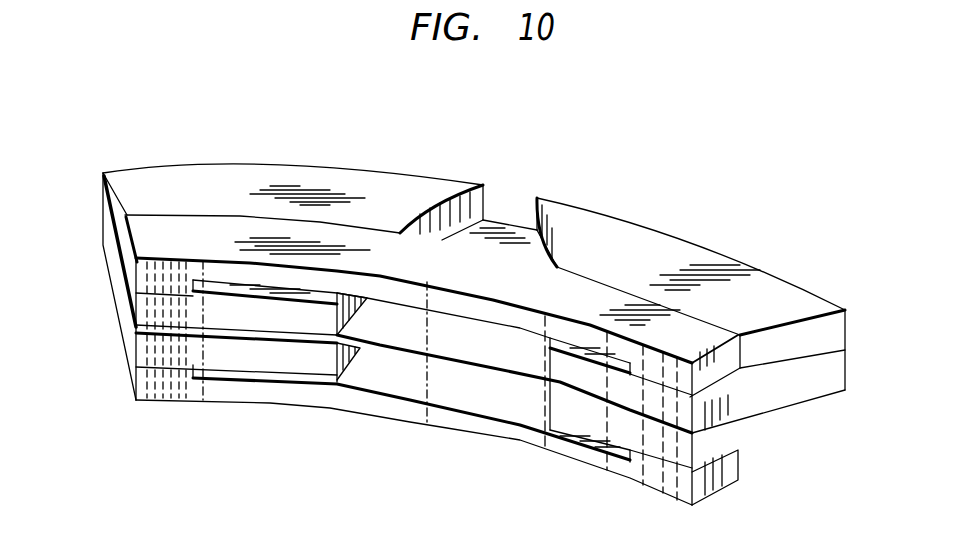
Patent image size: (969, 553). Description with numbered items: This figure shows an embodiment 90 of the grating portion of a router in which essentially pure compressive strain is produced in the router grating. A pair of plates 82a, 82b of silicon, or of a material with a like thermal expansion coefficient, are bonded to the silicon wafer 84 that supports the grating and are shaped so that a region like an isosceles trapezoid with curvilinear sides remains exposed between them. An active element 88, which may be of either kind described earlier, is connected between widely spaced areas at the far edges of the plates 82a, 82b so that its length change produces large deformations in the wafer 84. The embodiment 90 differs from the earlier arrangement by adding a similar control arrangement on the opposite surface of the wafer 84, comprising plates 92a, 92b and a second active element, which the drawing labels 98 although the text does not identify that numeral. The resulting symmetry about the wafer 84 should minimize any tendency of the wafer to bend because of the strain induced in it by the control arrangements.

The plate 82a is at (268, 180).
The plate 82b is at (670, 257).
The silicon wafer 84 is at (778, 390).
The active element 88 is at (477, 265).
The embodiment 90 is at (254, 458).
The plate 92a is at (152, 350).
The plate 92b is at (832, 375).
The bottom layer 98 is at (440, 417).